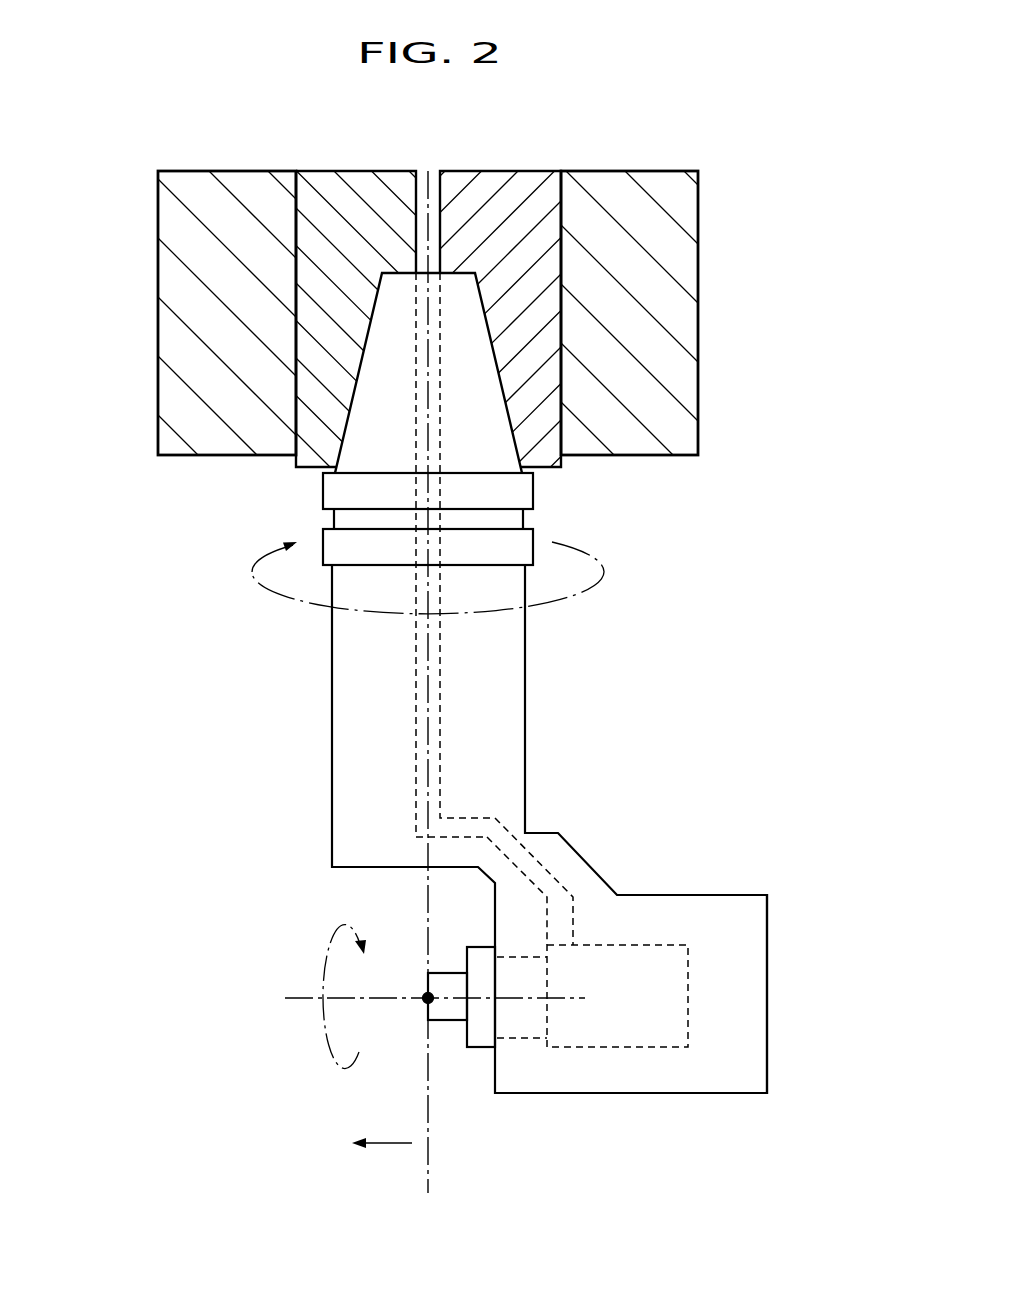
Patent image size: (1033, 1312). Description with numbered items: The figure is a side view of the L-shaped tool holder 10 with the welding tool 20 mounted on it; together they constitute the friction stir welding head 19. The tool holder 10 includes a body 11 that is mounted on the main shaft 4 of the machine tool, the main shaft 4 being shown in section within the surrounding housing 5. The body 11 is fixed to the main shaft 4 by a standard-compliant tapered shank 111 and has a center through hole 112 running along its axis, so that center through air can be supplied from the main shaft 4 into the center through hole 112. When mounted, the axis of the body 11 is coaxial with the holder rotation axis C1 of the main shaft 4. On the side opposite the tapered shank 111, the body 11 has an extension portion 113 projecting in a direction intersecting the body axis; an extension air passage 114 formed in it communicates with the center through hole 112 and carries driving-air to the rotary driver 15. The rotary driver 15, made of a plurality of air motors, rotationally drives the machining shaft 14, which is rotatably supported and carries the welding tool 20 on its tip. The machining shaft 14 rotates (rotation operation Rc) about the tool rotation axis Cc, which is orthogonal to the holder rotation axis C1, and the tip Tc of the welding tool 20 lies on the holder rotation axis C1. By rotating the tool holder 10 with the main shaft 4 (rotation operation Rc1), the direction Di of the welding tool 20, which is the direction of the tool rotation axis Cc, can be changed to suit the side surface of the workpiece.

The main shaft 4 is at (547, 363).
The spindle housing 5 is at (680, 315).
The L-shaped tool holder 10 is at (471, 719).
The body 11 is at (502, 720).
The machining shaft 14 is at (522, 1020).
The rotary driver 15 is at (635, 1023).
The friction stir welding head 19 is at (174, 689).
The welding tool 20 is at (453, 952).
The tapered shank 111 is at (357, 370).
The center through hole 112 is at (395, 668).
The extension portion 113 is at (667, 917).
The extension air passage 114 is at (535, 870).
The holder rotation axis C1 is at (428, 190).
The rotation operation Rc1 is at (452, 578).
The rotation operation Rc is at (330, 991).
The tool rotation axis Cc is at (417, 995).
The tip Tc is at (425, 999).
The direction Di is at (367, 1145).